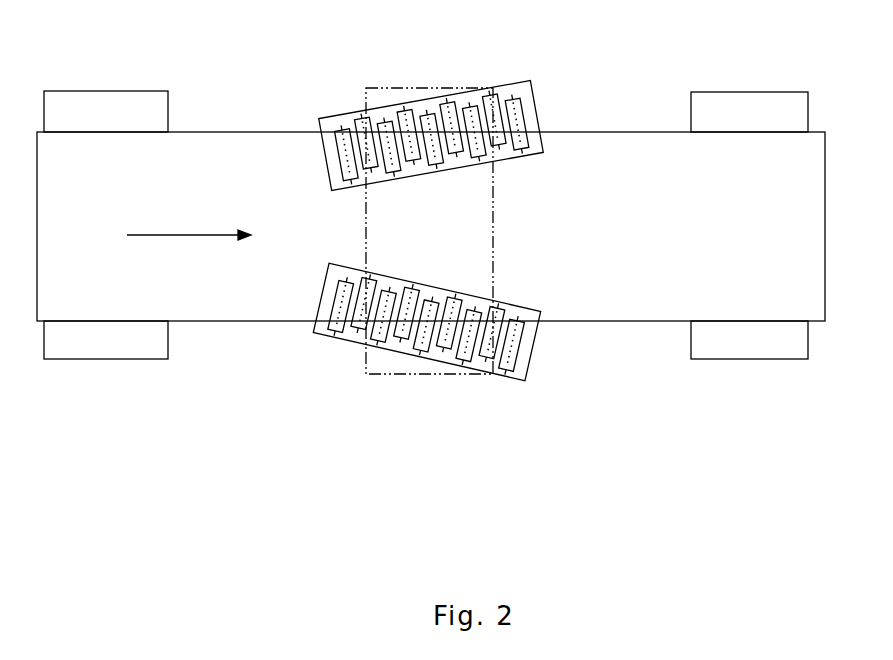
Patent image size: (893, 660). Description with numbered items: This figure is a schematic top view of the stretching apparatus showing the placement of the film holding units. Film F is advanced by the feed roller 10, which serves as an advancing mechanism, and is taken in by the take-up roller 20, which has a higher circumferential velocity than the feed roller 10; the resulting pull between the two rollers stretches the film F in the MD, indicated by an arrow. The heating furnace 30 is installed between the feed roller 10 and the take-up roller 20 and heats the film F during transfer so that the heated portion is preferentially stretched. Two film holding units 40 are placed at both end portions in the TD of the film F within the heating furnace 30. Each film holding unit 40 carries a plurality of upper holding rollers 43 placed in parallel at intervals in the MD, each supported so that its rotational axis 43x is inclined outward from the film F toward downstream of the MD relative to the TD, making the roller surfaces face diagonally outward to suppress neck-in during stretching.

The feed roller 10 is at (121, 103).
The take-up roller 20 is at (726, 104).
The heating furnace 30 is at (392, 377).
The film holding unit 40 is at (548, 110).
The upper holding roller 43 is at (533, 93).
The rotational axis 43x is at (500, 98).
The film F is at (223, 303).